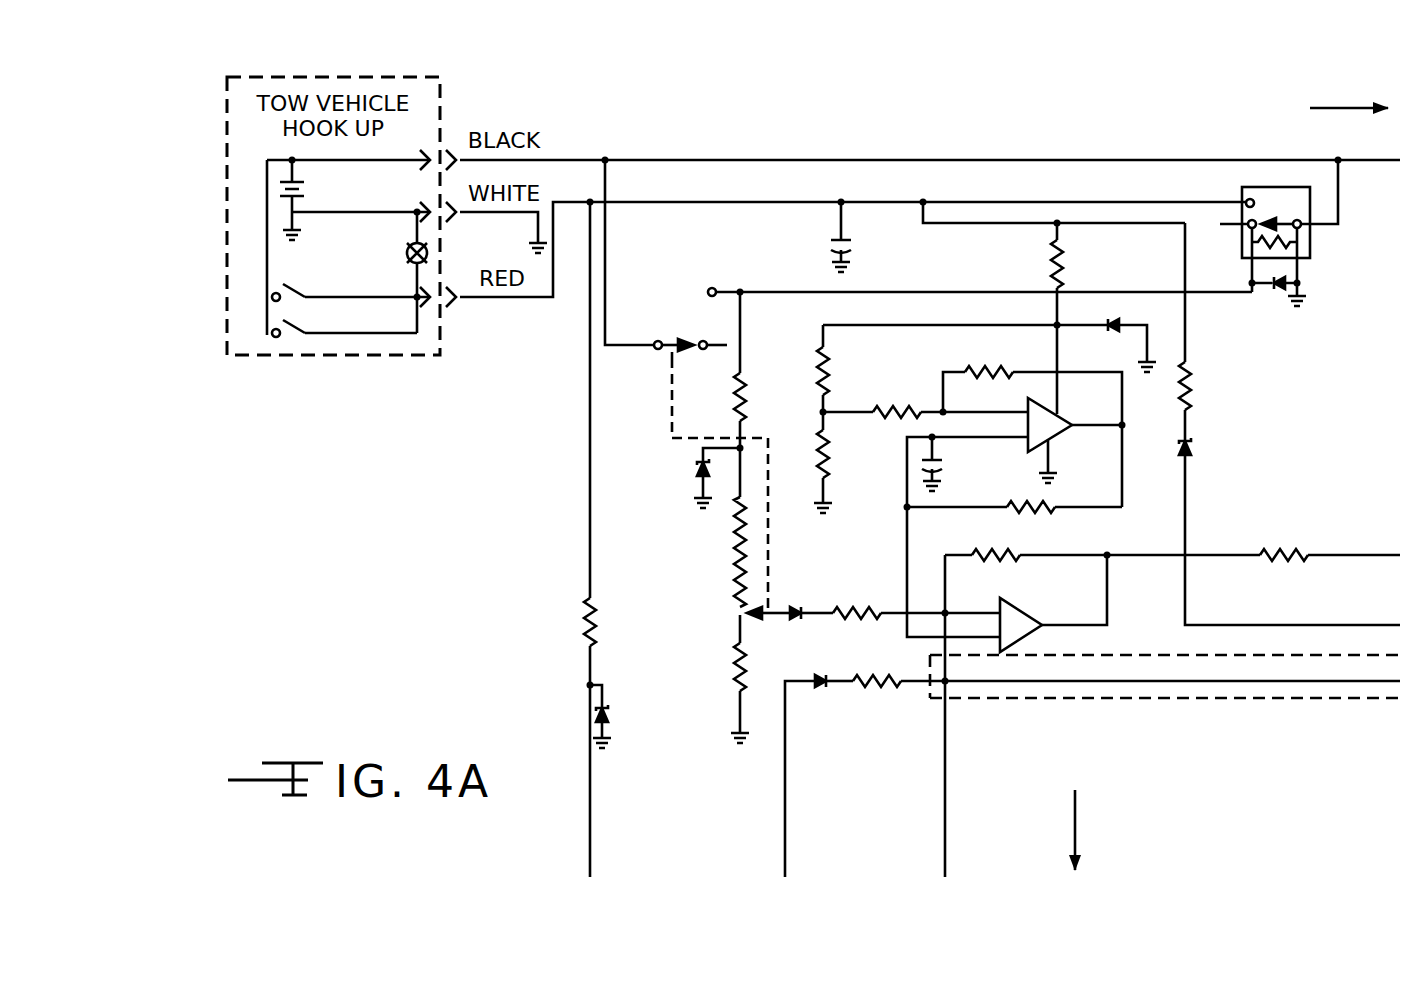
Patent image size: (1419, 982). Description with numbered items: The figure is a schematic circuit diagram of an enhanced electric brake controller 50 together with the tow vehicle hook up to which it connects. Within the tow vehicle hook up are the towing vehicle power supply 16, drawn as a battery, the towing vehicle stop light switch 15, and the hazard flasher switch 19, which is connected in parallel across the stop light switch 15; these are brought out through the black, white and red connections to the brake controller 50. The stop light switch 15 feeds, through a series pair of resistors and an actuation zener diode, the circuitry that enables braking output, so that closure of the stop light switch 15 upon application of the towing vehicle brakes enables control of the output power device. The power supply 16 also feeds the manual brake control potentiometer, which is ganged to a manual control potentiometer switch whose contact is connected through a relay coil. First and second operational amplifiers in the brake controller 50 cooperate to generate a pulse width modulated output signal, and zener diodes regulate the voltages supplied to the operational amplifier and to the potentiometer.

The towing vehicle power supply 16 is at (262, 182).
The stop light switch 15 is at (262, 258).
The hazard flasher switch 19 is at (262, 332).
The electric brake controller 50 is at (940, 116).